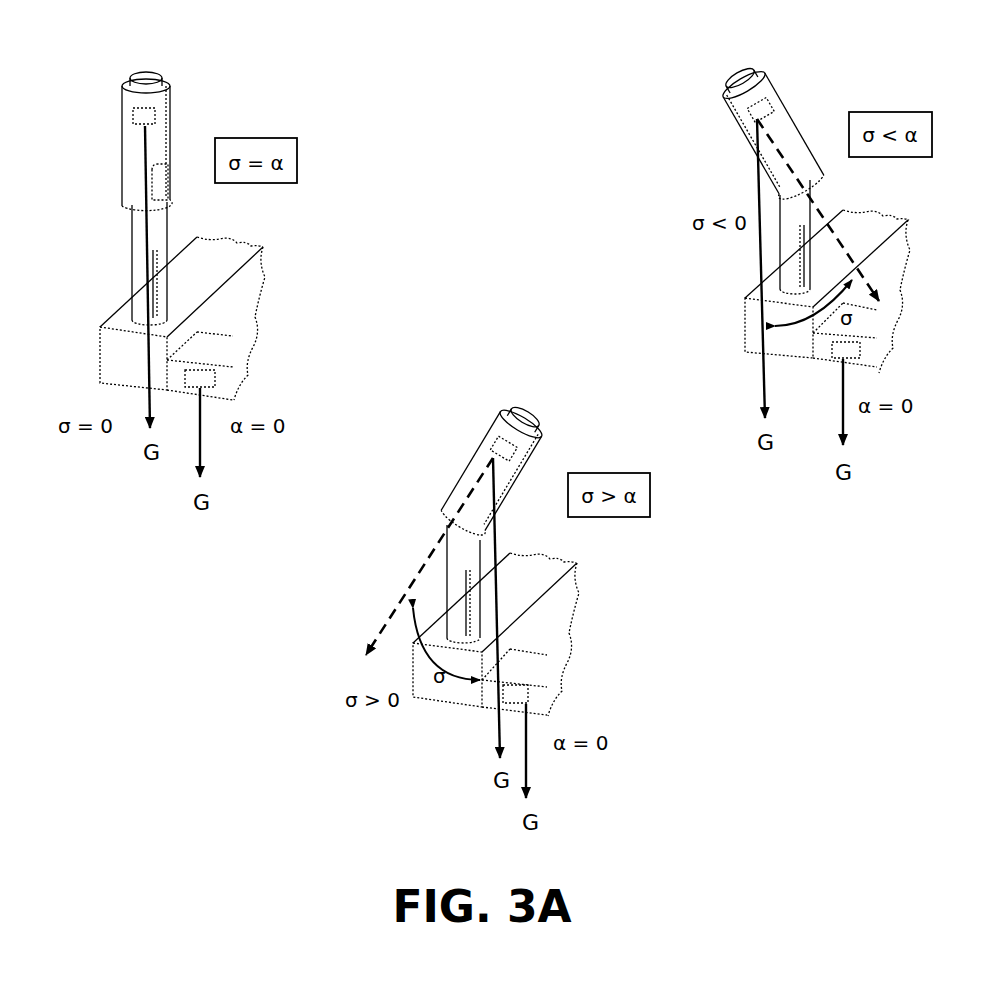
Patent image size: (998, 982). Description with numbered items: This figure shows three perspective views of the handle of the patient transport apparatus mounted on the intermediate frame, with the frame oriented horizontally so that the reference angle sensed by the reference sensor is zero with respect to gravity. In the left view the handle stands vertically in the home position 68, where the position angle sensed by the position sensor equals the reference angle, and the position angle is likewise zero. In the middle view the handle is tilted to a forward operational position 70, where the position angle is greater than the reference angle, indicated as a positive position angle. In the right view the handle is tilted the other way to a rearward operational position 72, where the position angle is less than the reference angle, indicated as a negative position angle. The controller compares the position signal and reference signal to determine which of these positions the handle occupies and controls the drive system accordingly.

The home position 68 is at (133, 52).
The forward operational position 70 is at (511, 377).
The rearward operational position 72 is at (716, 55).